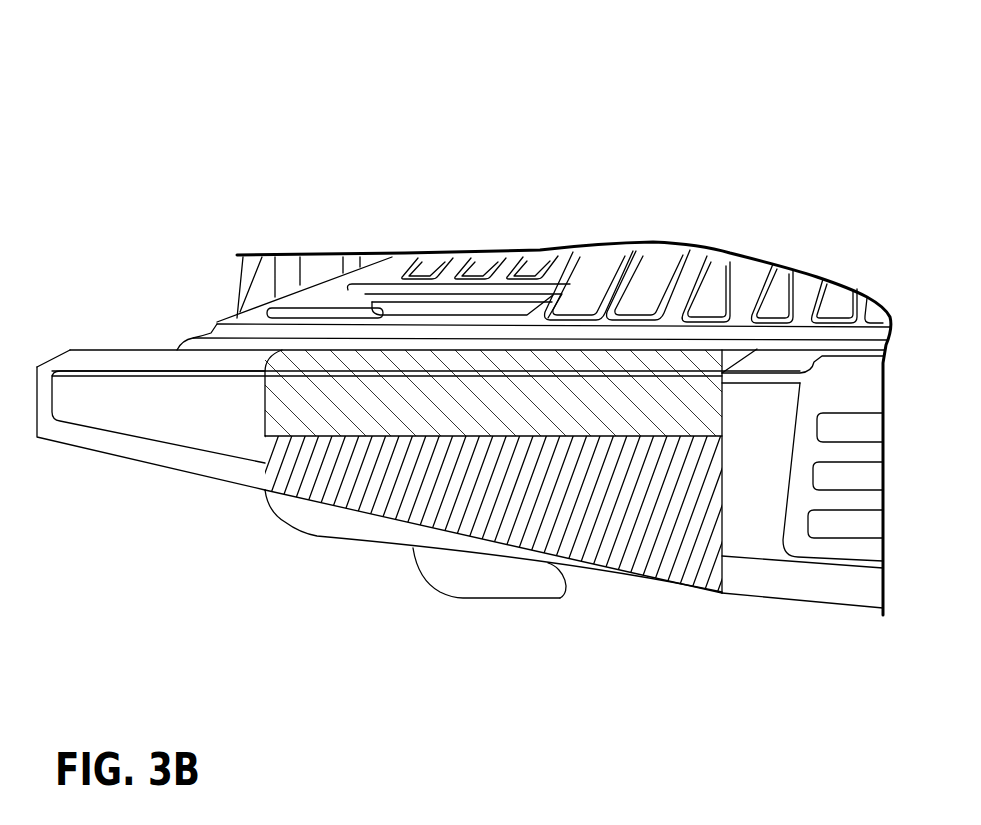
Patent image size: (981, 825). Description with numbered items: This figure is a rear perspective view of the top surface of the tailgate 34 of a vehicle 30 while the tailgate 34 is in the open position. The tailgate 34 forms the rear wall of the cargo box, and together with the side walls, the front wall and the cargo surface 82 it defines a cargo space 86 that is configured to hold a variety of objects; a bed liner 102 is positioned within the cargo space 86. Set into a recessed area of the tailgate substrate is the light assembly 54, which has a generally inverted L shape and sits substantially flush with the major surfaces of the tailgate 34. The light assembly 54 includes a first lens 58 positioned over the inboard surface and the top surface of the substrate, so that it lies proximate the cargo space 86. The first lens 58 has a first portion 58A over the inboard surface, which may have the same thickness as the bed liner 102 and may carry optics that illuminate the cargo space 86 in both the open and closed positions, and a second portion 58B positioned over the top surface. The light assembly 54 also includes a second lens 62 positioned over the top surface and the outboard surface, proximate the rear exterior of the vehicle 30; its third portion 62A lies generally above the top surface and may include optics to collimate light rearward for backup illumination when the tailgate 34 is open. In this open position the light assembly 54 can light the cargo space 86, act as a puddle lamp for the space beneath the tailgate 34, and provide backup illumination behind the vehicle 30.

The vehicle 30 is at (515, 130).
The tailgate 34 is at (120, 458).
The light assembly 54 is at (645, 587).
The first lens 58 is at (293, 403).
The first portion 58A is at (363, 362).
The second portion 58B is at (318, 397).
The second lens 62 is at (367, 480).
The third portion 62A is at (393, 482).
The cargo surface 82 is at (670, 267).
The cargo space 86 is at (593, 230).
The bed liner 102 is at (582, 315).